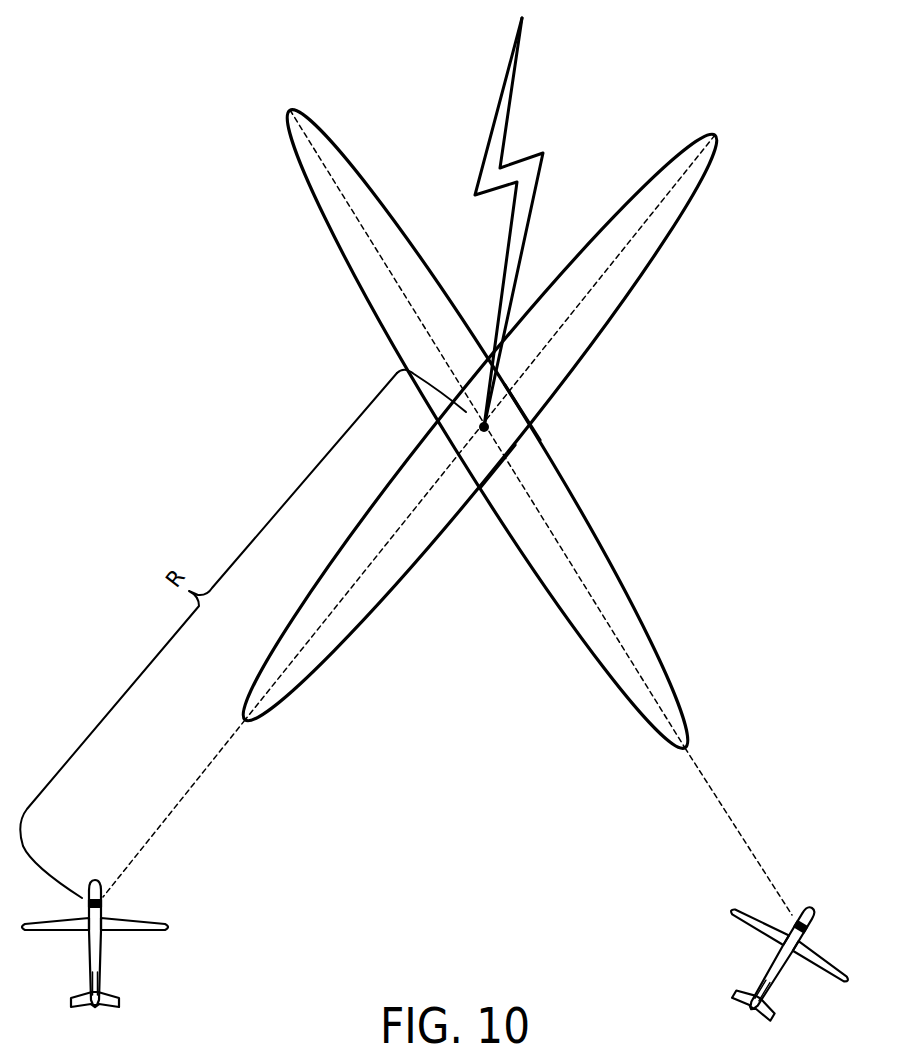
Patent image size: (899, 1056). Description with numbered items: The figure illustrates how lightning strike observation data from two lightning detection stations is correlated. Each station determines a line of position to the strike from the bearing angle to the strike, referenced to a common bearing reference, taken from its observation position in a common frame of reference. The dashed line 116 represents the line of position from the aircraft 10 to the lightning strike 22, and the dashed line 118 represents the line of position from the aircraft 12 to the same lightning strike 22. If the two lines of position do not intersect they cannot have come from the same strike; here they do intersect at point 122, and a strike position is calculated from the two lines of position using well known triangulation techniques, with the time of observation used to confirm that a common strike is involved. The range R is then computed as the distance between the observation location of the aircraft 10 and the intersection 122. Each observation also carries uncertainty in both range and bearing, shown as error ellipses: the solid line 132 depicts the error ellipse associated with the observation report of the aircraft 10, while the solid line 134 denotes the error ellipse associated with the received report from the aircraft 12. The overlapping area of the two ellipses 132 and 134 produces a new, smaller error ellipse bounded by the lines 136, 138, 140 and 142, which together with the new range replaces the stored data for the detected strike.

The aircraft 10 is at (102, 937).
The aircraft 12 is at (773, 957).
The lightning strike 22 is at (512, 90).
The dashed line 116 is at (192, 788).
The dashed line 118 is at (720, 805).
The intersection point 122 is at (484, 427).
The solid line 132 is at (677, 225).
The solid line 134 is at (322, 220).
The line 136 is at (522, 410).
The line 138 is at (476, 412).
The line 140 is at (460, 442).
The line 142 is at (498, 467).